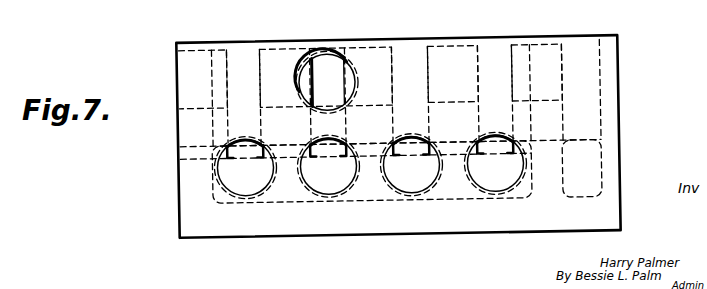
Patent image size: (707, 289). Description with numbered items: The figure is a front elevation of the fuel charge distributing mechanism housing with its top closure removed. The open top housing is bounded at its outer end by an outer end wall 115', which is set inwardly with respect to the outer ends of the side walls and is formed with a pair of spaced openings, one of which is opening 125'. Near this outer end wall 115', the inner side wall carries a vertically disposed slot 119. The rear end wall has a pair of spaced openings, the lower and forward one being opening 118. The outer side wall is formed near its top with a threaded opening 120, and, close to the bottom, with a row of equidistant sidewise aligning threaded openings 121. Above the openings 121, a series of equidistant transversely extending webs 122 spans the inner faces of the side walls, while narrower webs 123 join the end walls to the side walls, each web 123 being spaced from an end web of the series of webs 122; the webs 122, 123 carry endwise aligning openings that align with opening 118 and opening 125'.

The outer end wall 115' is at (432, 151).
The opening 118 is at (193, 107).
The vertically disposed slot 119 is at (605, 52).
The opening 120 is at (330, 62).
The openings 121 is at (249, 183).
The webs 122 is at (437, 160).
The webs 123 is at (220, 62).
The opening 125' is at (471, 76).